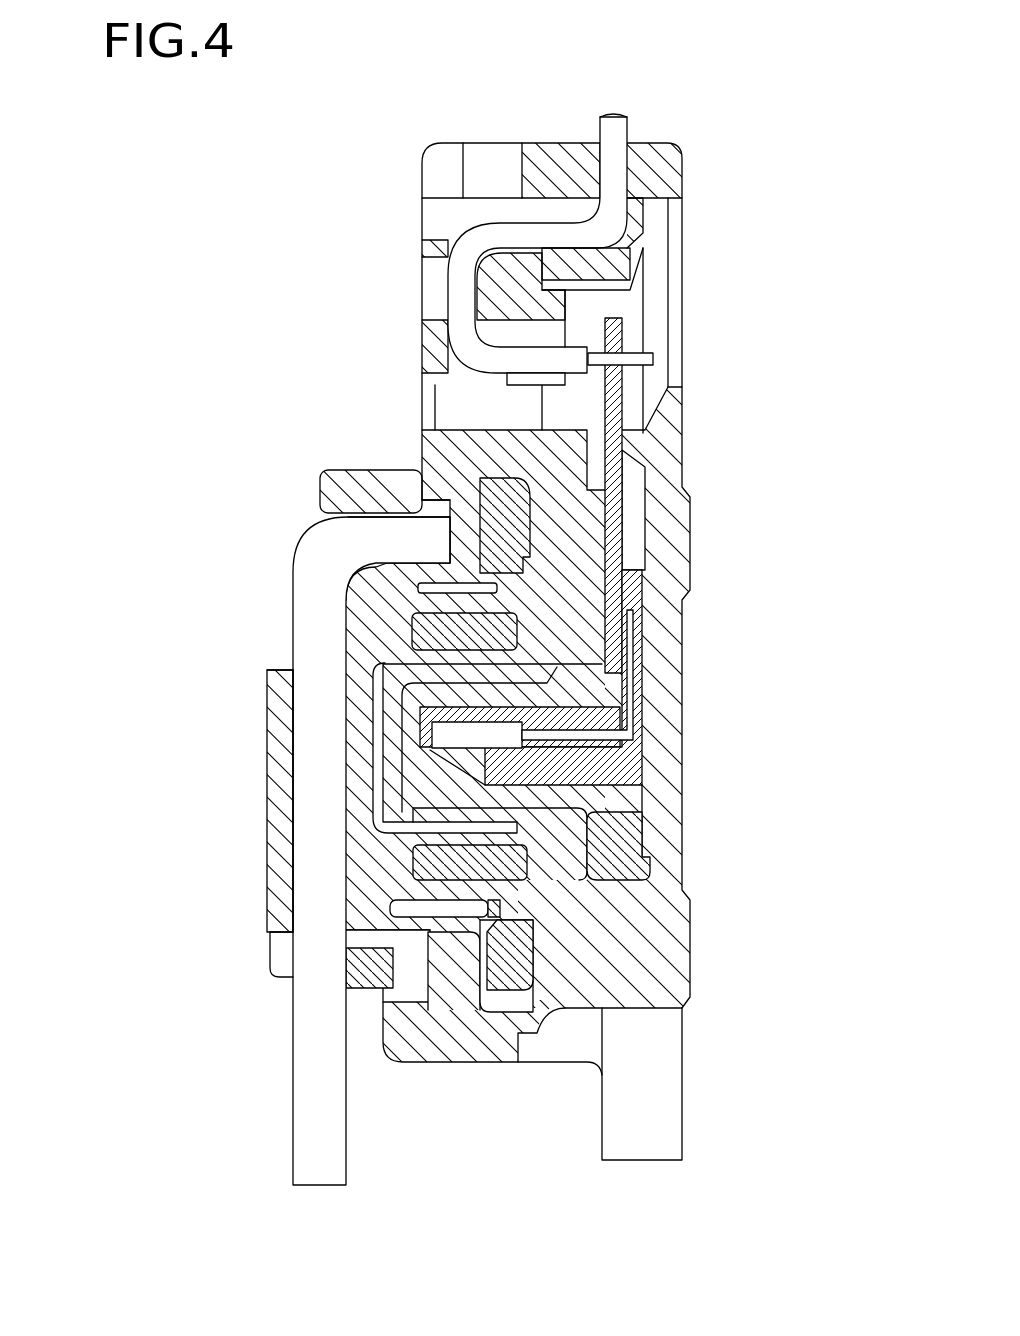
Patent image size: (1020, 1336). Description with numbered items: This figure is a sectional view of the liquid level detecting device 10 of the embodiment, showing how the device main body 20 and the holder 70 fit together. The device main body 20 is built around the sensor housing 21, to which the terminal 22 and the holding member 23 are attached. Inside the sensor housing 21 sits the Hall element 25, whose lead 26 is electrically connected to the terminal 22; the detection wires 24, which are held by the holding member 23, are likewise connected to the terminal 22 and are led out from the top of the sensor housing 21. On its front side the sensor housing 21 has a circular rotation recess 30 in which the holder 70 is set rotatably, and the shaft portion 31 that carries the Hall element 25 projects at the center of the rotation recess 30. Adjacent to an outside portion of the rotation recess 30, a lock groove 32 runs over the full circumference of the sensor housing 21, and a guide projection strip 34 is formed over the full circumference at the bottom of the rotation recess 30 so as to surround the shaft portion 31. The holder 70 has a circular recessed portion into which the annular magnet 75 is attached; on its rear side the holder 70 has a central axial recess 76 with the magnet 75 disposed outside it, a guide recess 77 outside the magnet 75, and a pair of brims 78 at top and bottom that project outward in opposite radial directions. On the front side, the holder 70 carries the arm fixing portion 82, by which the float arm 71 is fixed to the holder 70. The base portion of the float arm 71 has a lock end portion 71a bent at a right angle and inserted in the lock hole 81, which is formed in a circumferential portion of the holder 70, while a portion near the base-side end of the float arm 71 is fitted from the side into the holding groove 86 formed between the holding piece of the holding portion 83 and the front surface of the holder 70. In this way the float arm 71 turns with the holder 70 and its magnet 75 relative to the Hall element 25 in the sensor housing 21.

The liquid level detecting device 10 is at (266, 178).
The device main body 20 is at (687, 406).
The sensor housing 21 is at (687, 664).
The terminal 22 is at (630, 508).
The holding member 23 is at (487, 287).
The detection wires 24 is at (623, 131).
The Hall element 25 is at (450, 732).
The lead 26 is at (641, 693).
The rotation recess 30 is at (530, 880).
The shaft portion 31 is at (410, 648).
The lock groove 32 is at (527, 497).
The guide projection strip 34 is at (510, 912).
The holder 70 is at (343, 466).
The float arm 71 is at (291, 1028).
The lock end portion 71a is at (416, 535).
The magnet 75 is at (420, 858).
The axial recess 76 is at (390, 812).
The guide recess 77 is at (530, 587).
The brims 78 is at (500, 508).
The lock hole 81 is at (415, 532).
The arm fixing portion 82 is at (263, 816).
The holding portion 83 is at (308, 742).
The holding groove 86 is at (308, 742).